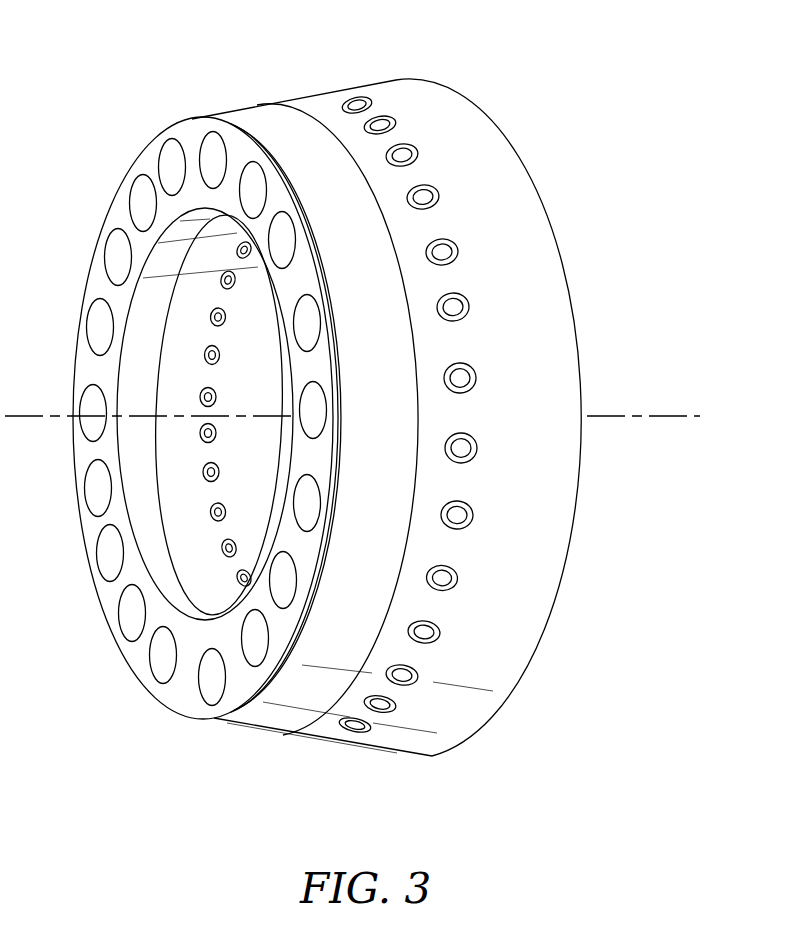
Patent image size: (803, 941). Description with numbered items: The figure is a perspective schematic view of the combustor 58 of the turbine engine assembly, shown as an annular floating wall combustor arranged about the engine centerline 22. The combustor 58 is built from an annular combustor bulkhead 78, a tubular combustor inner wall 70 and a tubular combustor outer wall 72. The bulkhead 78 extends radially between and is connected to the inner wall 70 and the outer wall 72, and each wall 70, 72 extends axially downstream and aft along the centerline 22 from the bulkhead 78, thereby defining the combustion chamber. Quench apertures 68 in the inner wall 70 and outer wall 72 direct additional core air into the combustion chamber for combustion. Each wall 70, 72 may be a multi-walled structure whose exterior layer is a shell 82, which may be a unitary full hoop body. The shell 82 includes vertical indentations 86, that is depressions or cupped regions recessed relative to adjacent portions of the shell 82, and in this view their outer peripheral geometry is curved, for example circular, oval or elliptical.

The centerline 22 is at (671, 416).
The combustor 58 is at (505, 89).
The quench apertures 68 is at (466, 378).
The combustor inner wall 70 is at (152, 523).
The combustor outer wall 72 is at (546, 311).
The combustor bulkhead 78 is at (166, 694).
The shell 82 is at (541, 237).
The vertical indentations 86 is at (472, 390).